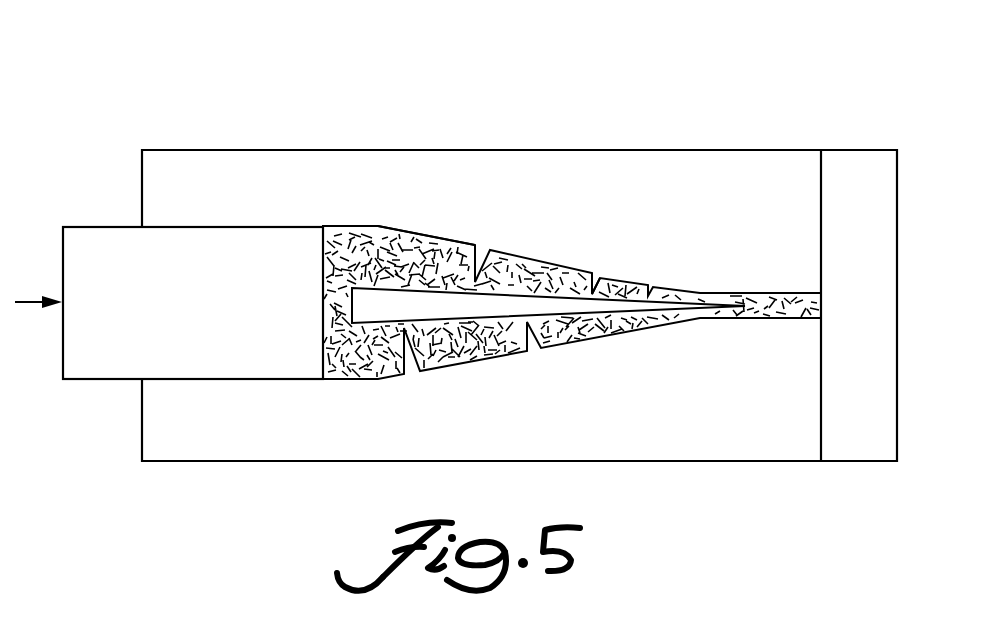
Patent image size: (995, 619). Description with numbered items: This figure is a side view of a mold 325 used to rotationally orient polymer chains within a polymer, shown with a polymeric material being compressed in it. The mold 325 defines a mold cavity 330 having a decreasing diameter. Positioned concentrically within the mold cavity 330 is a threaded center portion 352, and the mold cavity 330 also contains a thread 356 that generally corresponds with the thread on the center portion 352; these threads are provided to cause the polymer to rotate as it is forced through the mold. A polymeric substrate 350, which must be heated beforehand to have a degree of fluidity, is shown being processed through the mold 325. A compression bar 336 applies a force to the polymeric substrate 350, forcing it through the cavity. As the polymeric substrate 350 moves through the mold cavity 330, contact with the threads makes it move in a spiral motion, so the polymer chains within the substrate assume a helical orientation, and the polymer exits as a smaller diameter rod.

The mold 325 is at (217, 107).
The mold cavity 330 is at (343, 226).
The compression bar 336 is at (204, 320).
The polymeric substrate 350 is at (417, 240).
The threaded center portion 352 is at (500, 293).
The thread 356 is at (600, 273).